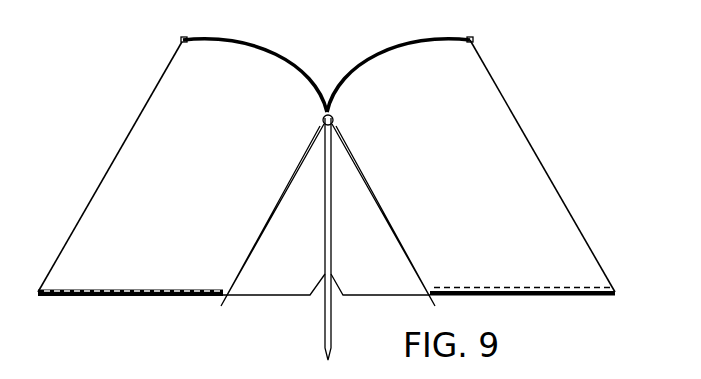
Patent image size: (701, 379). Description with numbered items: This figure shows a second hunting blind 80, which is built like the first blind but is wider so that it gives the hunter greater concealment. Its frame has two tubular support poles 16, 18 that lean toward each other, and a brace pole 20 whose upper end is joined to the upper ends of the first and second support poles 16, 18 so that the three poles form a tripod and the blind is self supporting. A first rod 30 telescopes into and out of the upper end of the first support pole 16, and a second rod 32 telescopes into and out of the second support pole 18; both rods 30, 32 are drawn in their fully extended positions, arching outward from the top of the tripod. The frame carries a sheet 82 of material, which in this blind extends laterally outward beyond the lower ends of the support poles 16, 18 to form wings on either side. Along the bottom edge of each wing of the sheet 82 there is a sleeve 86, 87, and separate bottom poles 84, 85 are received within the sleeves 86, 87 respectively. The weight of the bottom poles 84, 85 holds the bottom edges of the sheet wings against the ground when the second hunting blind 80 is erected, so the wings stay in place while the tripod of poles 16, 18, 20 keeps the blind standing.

The first support pole 16 is at (260, 232).
The second support pole 18 is at (384, 202).
The brace pole 20 is at (326, 307).
The first rod 30 is at (370, 67).
The second rod 32 is at (282, 66).
The second hunting blind 80 is at (517, 98).
The sheet 82 is at (556, 213).
The bottom pole 84 is at (148, 297).
The bottom pole 85 is at (540, 297).
The sleeve 86 is at (135, 289).
The sleeve 87 is at (488, 288).